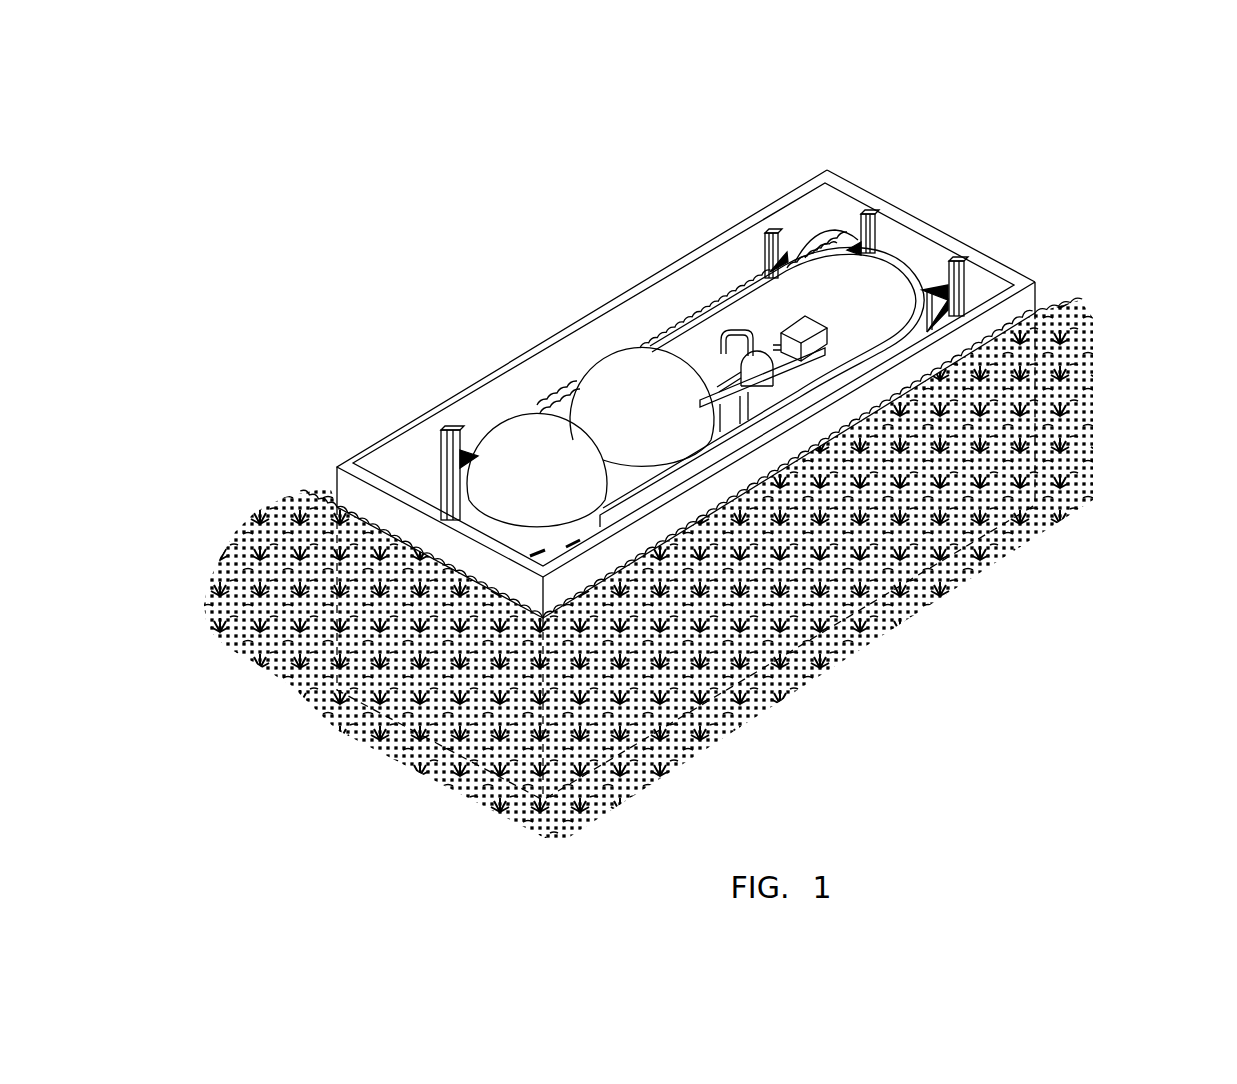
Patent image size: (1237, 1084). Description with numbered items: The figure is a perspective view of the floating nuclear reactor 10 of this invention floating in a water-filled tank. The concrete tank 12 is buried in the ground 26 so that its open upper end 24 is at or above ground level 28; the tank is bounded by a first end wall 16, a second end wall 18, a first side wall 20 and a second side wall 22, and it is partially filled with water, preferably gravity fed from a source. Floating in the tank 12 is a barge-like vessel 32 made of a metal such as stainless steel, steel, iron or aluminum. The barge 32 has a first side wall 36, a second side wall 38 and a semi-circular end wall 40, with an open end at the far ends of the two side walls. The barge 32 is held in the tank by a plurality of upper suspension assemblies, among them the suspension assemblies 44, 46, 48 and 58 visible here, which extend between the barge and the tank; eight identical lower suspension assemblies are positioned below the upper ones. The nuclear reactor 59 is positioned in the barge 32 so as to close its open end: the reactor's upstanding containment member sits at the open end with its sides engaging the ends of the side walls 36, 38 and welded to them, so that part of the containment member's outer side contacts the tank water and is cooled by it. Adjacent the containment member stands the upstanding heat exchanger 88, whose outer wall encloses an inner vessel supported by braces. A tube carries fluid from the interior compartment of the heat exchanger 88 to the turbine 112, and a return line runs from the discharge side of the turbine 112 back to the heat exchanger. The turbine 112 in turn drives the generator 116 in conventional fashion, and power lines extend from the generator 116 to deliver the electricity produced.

The floating nuclear reactor 10 is at (658, 222).
The concrete tank 12 is at (1040, 277).
The first end wall 16 is at (373, 505).
The second end wall 18 is at (945, 236).
The first side wall 20 is at (972, 338).
The second side wall 22 is at (597, 306).
The open upper end 24 is at (592, 527).
The ground 26 is at (490, 725).
The ground level 28 is at (955, 382).
The barge-like vessel 32 is at (885, 267).
The first side wall 36 is at (790, 412).
The second side wall 38 is at (678, 325).
The semi-circular end wall 40 is at (898, 278).
The upper suspension assembly 44 is at (770, 228).
The upper suspension assembly 46 is at (878, 199).
The upper suspension assembly 48 is at (972, 264).
The upper suspension assembly 58 is at (447, 425).
The nuclear reactor 59 is at (513, 420).
The heat exchanger 88 is at (600, 371).
The turbine 112 is at (757, 355).
The generator 116 is at (801, 314).